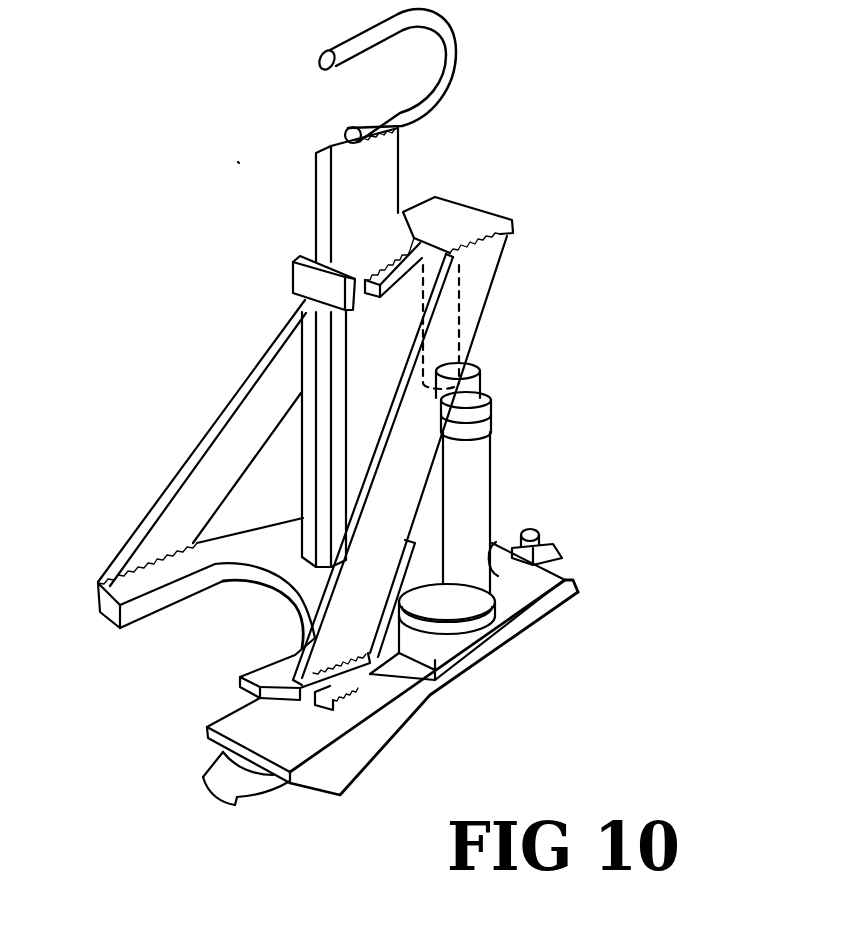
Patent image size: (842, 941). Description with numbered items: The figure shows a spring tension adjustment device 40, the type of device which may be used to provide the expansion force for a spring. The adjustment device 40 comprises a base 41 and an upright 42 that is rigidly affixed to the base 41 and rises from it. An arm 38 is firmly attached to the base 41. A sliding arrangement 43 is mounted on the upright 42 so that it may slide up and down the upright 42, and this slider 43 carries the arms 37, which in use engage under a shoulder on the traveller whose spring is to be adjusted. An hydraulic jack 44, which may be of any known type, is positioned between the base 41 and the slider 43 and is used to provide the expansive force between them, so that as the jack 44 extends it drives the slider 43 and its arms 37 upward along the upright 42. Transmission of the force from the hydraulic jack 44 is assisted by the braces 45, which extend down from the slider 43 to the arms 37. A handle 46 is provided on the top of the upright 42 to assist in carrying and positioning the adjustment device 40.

The arms 37 is at (127, 595).
The arm 38 is at (225, 773).
The adjustment device 40 is at (238, 162).
The base 41 is at (323, 738).
The upright 42 is at (378, 165).
The sliding arrangement 43 is at (452, 225).
The hydraulic jack 44 is at (468, 488).
The braces 45 is at (473, 297).
The handle 46 is at (445, 55).